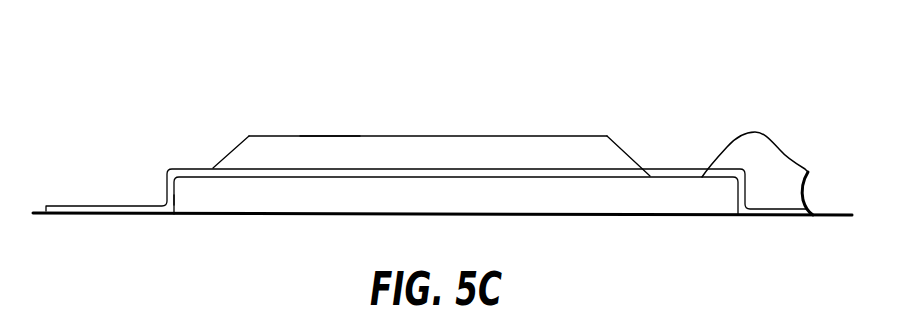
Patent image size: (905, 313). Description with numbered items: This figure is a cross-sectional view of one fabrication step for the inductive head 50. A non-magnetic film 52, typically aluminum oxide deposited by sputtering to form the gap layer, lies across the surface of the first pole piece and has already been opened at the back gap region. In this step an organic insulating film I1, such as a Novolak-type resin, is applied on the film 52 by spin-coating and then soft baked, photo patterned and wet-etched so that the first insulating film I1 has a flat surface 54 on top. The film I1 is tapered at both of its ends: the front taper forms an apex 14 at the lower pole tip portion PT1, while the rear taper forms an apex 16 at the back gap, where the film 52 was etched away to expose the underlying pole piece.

The inductive head 50 is at (742, 263).
The non-magnetic film 52 is at (165, 181).
The lower pole tip portion PT1 is at (176, 204).
The flat surface 54 is at (445, 135).
The first insulating film I1 is at (332, 135).
The apex 14 is at (213, 168).
The apex 16 is at (650, 175).